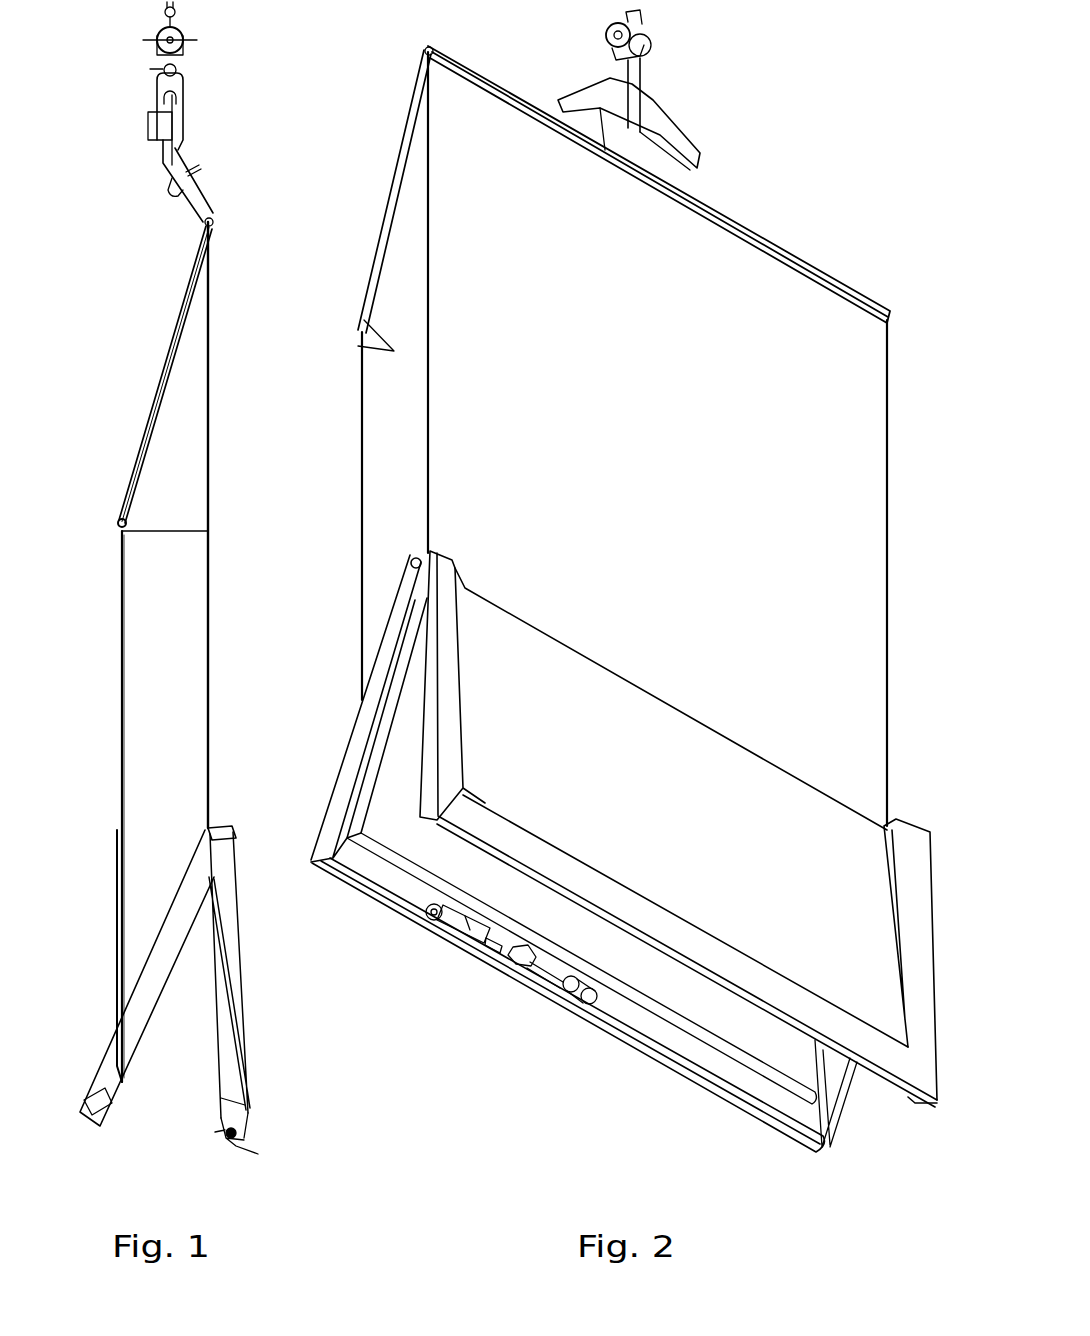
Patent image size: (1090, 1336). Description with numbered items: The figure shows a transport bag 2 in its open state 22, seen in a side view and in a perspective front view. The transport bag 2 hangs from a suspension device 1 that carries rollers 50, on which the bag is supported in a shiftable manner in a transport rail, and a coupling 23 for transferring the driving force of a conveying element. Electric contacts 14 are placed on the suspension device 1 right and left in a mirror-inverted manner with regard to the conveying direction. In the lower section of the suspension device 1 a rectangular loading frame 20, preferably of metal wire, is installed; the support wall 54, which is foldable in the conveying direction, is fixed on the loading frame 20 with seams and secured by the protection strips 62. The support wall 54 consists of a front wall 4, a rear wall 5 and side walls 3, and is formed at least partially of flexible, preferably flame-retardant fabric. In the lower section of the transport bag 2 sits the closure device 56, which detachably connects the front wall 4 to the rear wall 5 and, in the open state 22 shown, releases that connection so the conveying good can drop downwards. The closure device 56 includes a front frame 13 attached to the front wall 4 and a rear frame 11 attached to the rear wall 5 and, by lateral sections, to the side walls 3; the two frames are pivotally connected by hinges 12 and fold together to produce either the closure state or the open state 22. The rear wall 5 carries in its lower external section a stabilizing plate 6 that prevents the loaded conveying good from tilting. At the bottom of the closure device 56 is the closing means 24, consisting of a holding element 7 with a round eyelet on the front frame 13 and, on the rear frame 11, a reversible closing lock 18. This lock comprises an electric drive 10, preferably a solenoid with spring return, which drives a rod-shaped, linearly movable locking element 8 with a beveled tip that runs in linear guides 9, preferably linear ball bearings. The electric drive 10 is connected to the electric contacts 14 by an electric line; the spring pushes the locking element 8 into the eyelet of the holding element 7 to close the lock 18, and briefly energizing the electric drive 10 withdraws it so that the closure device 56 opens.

In FIG. 1, the suspension device 1 is at (137, 122).
In FIG. 2, the suspension device 1 is at (700, 145).
In FIG. 1, the transport bag 2 is at (150, 357).
In FIG. 2, the transport bag 2 is at (368, 232).
In FIG. 1, the side walls 3 is at (158, 760).
In FIG. 2, the side walls 3 is at (385, 475).
In FIG. 1, the front wall 4 is at (212, 670).
In FIG. 2, the front wall 4 is at (745, 358).
In FIG. 1, the rear wall 5 is at (118, 705).
In FIG. 1, the stabilizing plate 6 is at (113, 918).
In FIG. 1, the holding element 7 is at (240, 1135).
In FIG. 2, the holding element 7 is at (672, 962).
In FIG. 2, the locking element 8 is at (540, 987).
In FIG. 2, the linear guides 9 is at (522, 967).
In FIG. 2, the electric drive 10 is at (470, 927).
In FIG. 1, the rear frame 11 is at (107, 1075).
In FIG. 2, the rear frame 11 is at (430, 905).
In FIG. 2, the hinges 12 is at (413, 561).
In FIG. 1, the front frame 13 is at (218, 850).
In FIG. 2, the front frame 13 is at (420, 673).
In FIG. 1, the electric contacts 14 is at (186, 70).
In FIG. 2, the reversible closing lock 18 is at (485, 970).
In FIG. 1, the loading frame 20 is at (140, 440).
In FIG. 2, the loading frame 20 is at (366, 285).
In FIG. 1, the open state 22 is at (178, 1047).
In FIG. 2, the open state 22 is at (335, 905).
In FIG. 1, the coupling 23 is at (163, 18).
In FIG. 2, the closing means 24 is at (665, 990).
In FIG. 2, the rollers 50 is at (655, 48).
In FIG. 2, the support wall 54 is at (725, 312).
In FIG. 2, the closure device 56 is at (401, 822).
In FIG. 1, the protection strips 62 is at (120, 520).
In FIG. 2, the protection strips 62 is at (848, 292).